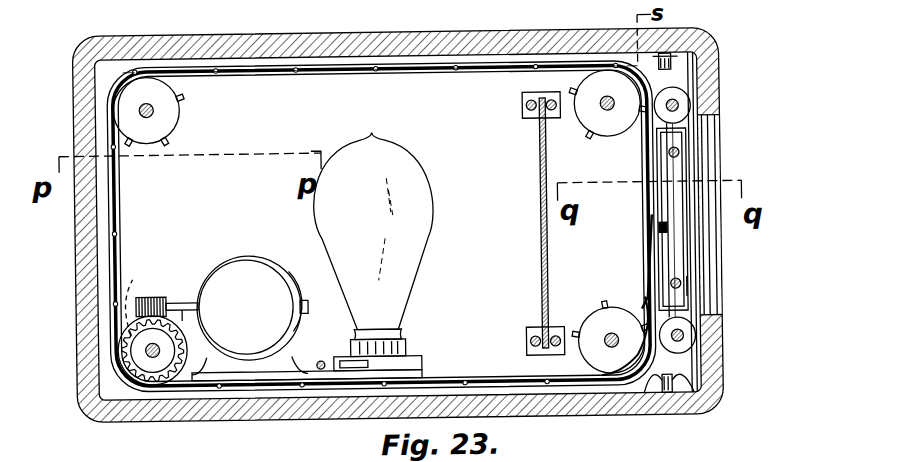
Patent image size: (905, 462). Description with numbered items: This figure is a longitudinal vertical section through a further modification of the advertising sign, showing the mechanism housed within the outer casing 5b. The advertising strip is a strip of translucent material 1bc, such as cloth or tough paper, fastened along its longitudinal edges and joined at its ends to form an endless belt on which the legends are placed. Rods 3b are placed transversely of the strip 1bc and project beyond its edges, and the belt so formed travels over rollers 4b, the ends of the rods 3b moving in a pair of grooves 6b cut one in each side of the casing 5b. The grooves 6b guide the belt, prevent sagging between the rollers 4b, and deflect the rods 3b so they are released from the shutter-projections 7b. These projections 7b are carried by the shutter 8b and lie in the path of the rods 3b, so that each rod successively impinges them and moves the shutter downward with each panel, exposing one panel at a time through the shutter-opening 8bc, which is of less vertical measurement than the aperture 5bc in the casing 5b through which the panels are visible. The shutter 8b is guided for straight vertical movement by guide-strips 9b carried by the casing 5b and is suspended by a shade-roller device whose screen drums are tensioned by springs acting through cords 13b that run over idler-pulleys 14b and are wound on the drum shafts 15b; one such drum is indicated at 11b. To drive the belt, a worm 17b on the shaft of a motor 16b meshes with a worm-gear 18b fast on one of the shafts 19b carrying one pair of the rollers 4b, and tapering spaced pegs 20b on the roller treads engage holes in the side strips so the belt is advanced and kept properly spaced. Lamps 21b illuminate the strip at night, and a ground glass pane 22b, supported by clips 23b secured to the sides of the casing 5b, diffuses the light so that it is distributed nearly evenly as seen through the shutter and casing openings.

The strip of translucent material 1bc is at (440, 76).
The rods 3b is at (370, 76).
The rollers 4b is at (382, 228).
The outer casing 5b is at (223, 415).
The aperture 5bc is at (722, 172).
The grooves 6b is at (635, 300).
The shutter-projections 7b is at (644, 232).
The shutter 8b is at (642, 172).
The shutter-opening 8bc is at (670, 214).
The guide-strips 9b is at (680, 300).
The small pulleys 11b is at (692, 101).
The cords 13b is at (692, 398).
The idler-pulleys 14b is at (675, 67).
The shafts 15b is at (740, 370).
The motor 16b is at (306, 317).
The worm 17b is at (147, 295).
The worm-gear 18b is at (140, 285).
The shafts 19b is at (128, 344).
The pegs 20b is at (186, 95).
The lamps 21b is at (374, 252).
The ground glass pane 22b is at (540, 285).
The clips 23b is at (527, 121).